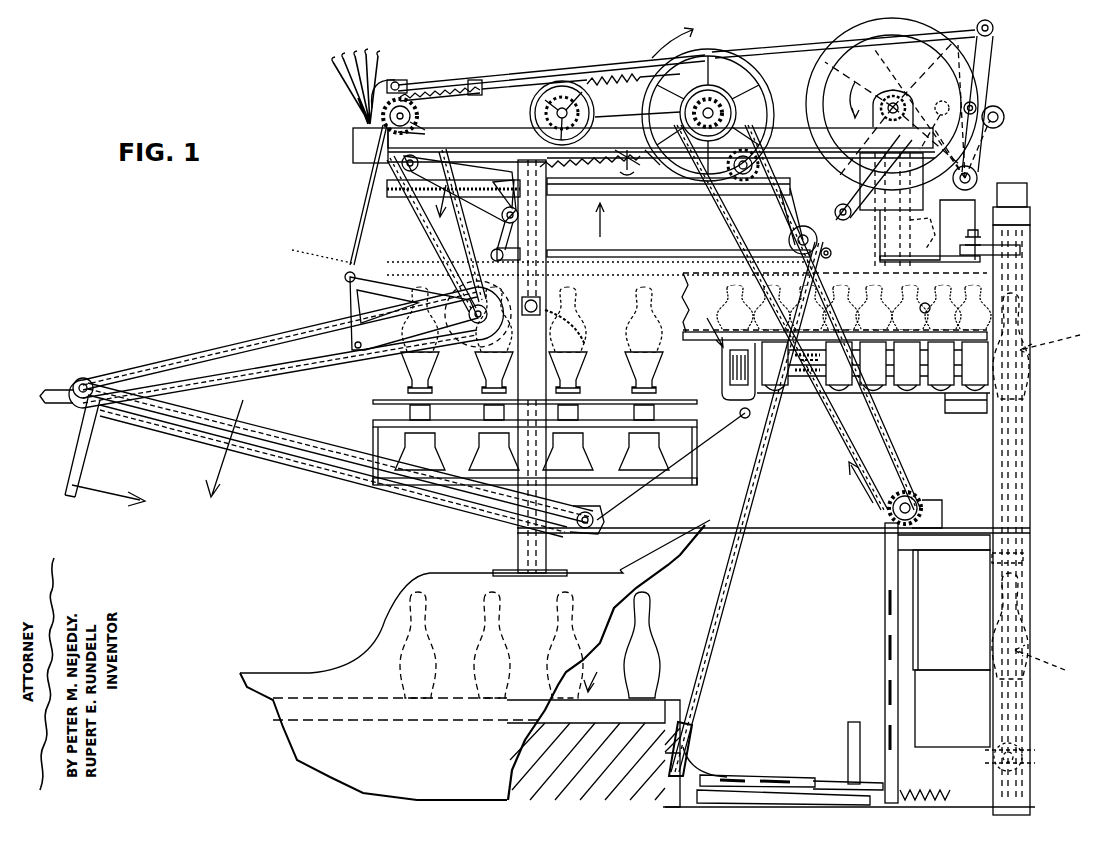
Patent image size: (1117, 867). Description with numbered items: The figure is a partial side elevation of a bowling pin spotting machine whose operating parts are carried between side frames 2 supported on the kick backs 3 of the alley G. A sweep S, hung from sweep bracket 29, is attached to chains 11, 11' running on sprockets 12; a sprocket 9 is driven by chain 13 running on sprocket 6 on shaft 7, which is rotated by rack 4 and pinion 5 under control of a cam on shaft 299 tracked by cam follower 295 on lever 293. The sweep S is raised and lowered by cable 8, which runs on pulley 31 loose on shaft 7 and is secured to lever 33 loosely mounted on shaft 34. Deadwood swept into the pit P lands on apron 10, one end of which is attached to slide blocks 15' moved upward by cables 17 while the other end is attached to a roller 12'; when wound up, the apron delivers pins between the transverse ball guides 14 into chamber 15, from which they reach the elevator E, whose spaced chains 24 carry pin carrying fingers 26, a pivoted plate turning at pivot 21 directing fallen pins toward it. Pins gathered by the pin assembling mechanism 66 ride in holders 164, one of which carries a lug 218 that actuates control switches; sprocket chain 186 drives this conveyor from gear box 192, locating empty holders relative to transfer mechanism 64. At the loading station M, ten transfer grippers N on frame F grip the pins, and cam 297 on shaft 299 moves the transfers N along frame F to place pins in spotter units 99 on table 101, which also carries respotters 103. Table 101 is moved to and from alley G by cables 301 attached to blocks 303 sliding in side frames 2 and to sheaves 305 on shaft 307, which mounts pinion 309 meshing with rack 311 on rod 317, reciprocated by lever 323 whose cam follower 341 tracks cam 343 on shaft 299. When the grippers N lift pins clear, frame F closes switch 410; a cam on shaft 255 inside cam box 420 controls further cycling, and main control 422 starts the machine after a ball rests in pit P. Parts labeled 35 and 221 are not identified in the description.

The side frames 2 is at (458, 130).
The kick backs 3 is at (470, 580).
The rack 4 is at (420, 90).
The pinion 5 is at (418, 126).
The sprocket 6 is at (382, 92).
The shaft 7 is at (403, 97).
The cable 8 is at (368, 183).
The sprocket 9 is at (474, 328).
The apron 10 is at (883, 560).
The chains 11 is at (331, 405).
The conveyor arm 11' is at (333, 471).
The sprockets 12 is at (331, 456).
The roller 12' is at (802, 324).
The chain 13 is at (425, 238).
The transverse ball guides 14 is at (930, 512).
The pin receiving chamber 15 is at (917, 641).
The slide blocks 15' is at (783, 755).
The cables 17 is at (762, 488).
The pivot 21 is at (706, 52).
The chains 24 is at (1005, 752).
The pin carrying fingers 26 is at (1025, 568).
The sweep bracket 29 is at (348, 292).
The pulley 31 is at (362, 115).
The lever 33 is at (995, 50).
The shaft 34 is at (978, 178).
The beam 35 is at (652, 188).
The transfer mechanism 64 is at (1035, 272).
The pin assembling mechanism 66 is at (812, 392).
The spotter units 99 is at (415, 370).
The table 101 is at (368, 412).
The respotters 103 is at (482, 472).
The pin holders 164 is at (909, 402).
The sprocket chain 186 is at (985, 256).
The gear box 192 is at (935, 238).
The lug 218 is at (730, 378).
The cup 221 is at (722, 362).
The shaft 255 is at (835, 213).
The lever 293 is at (994, 29).
The cam follower 295 is at (1004, 116).
The cam 297 is at (978, 105).
The shaft 299 is at (893, 99).
The cables 301 is at (530, 140).
The blocks 303 is at (545, 303).
The sheaves 305 is at (530, 80).
The shaft 307 is at (556, 114).
The pinion 309 is at (566, 88).
The rack 311 is at (618, 76).
The rod 317 is at (815, 36).
The lever 323 is at (985, 50).
The cam follower 341 is at (966, 127).
The cam 343 is at (975, 150).
The switch 410 is at (615, 157).
The cam box 420 is at (832, 258).
The main control 422 is at (355, 152).
The elevator E is at (1042, 500).
The transfer frame F is at (442, 233).
The alley G is at (771, 728).
The loading station M is at (836, 310).
The pin transfers N is at (725, 252).
The pit P is at (871, 761).
The sweep S is at (80, 460).